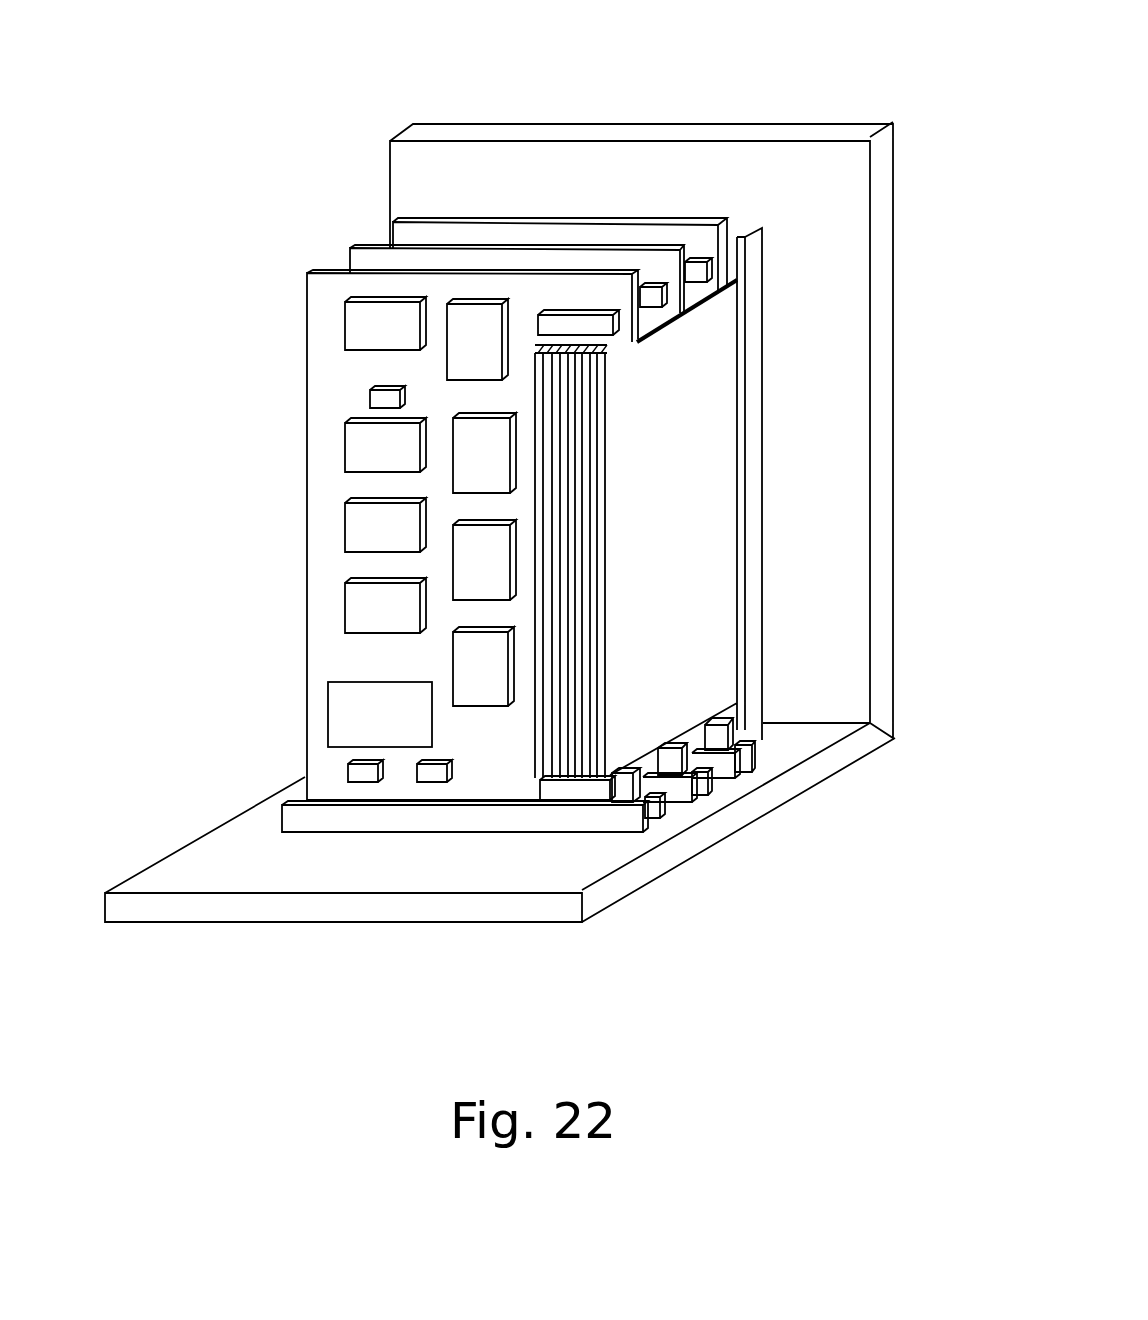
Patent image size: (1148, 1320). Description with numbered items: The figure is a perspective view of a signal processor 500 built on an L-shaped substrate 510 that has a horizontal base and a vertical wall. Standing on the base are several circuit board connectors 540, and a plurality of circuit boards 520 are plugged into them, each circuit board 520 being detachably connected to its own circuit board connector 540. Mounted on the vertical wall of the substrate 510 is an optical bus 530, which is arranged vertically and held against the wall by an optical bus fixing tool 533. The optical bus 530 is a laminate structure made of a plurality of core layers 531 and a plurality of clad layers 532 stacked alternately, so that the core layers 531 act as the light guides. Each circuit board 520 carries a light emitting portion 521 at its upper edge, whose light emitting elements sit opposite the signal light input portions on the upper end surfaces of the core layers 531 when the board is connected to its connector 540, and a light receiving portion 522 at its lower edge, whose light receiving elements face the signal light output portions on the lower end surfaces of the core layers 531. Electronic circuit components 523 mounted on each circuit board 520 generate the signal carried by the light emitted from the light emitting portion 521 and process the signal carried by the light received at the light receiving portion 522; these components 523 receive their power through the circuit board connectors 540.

The signal processor 500 is at (712, 105).
The substrate 510 is at (883, 200).
The circuit boards 520 is at (407, 233).
The light emitting portion 521 is at (688, 278).
The light receiving portion 522 is at (643, 765).
The electronic circuit components 523 is at (455, 365).
The optical bus 530 is at (717, 497).
The core layers 531 is at (560, 407).
The clad layers 532 is at (585, 517).
The optical bus fixing tool 533 is at (757, 285).
The circuit board connectors 540 is at (627, 817).